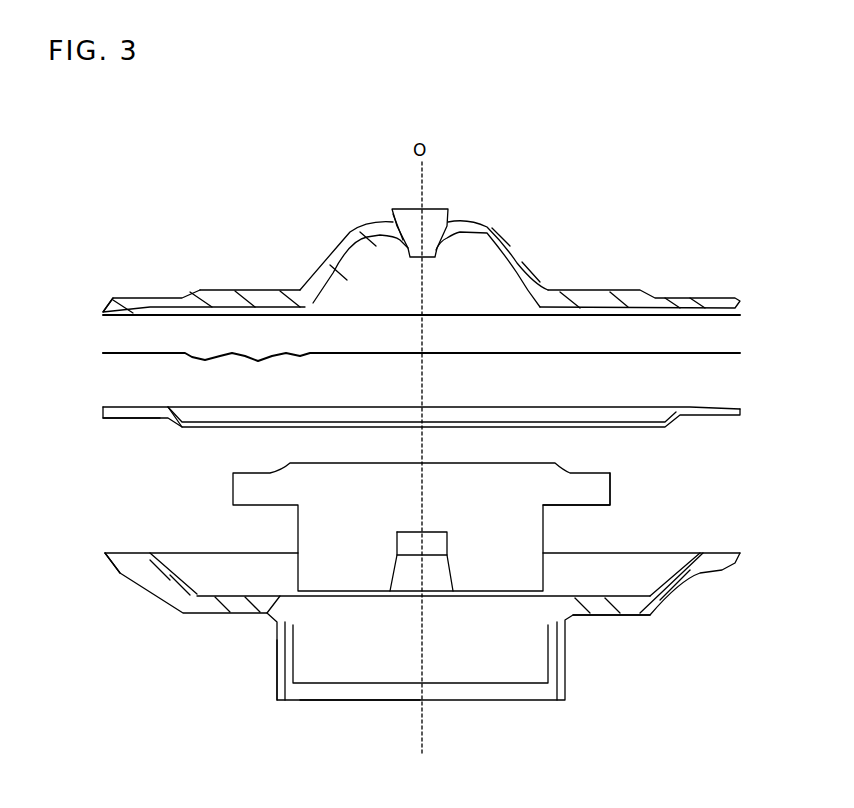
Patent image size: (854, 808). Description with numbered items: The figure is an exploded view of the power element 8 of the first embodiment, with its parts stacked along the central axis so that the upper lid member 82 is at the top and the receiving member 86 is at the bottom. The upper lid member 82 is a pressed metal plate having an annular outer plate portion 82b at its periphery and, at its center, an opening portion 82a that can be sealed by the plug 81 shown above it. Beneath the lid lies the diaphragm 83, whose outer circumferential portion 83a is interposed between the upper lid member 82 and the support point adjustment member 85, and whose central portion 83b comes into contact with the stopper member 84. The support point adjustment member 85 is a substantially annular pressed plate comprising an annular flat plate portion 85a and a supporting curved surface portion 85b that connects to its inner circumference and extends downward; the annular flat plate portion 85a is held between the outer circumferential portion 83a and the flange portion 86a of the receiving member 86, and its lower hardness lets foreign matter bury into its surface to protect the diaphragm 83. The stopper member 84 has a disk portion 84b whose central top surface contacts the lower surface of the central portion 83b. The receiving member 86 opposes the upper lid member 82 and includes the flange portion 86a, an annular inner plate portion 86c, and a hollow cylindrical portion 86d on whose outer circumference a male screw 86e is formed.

The power element 8 is at (668, 212).
The plug 81 is at (448, 212).
The upper lid member 82 is at (737, 305).
The opening portion 82a is at (392, 212).
The outer plate portion 82b is at (138, 295).
The diaphragm 83 is at (742, 352).
The outer circumferential portion 83a is at (133, 358).
The central portion 83b is at (378, 352).
The stopper member 84 is at (612, 487).
The disk portion 84b is at (598, 505).
The support point adjustment member 85 is at (742, 412).
The annular flat plate portion 85a is at (150, 421).
The supporting curved surface portion 85b is at (176, 420).
The receiving member 86 is at (730, 565).
The flange portion 86a is at (135, 572).
The inner plate portion 86c is at (630, 608).
The hollow cylindrical portion 86d is at (300, 643).
The male screw 86e is at (278, 670).